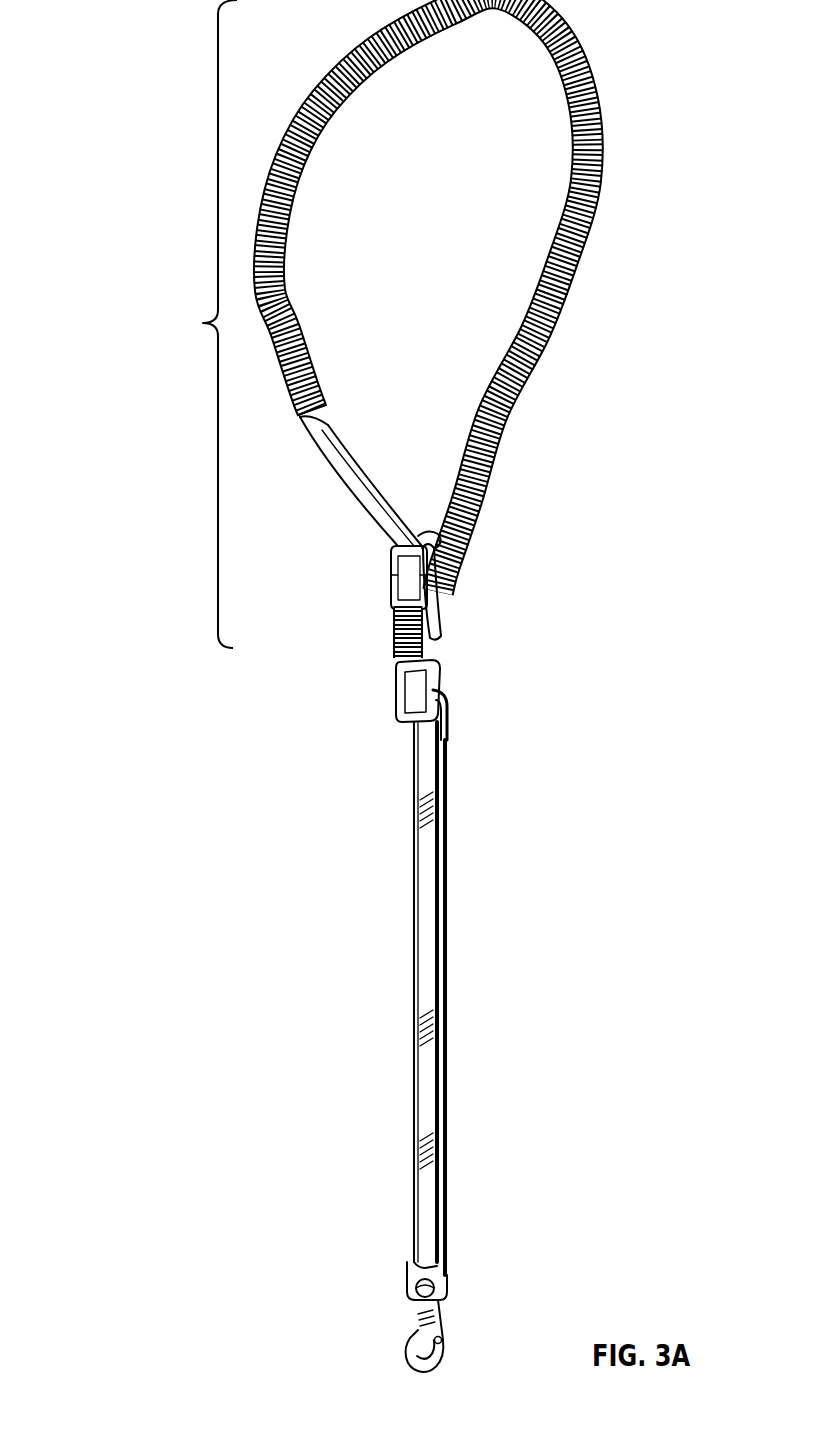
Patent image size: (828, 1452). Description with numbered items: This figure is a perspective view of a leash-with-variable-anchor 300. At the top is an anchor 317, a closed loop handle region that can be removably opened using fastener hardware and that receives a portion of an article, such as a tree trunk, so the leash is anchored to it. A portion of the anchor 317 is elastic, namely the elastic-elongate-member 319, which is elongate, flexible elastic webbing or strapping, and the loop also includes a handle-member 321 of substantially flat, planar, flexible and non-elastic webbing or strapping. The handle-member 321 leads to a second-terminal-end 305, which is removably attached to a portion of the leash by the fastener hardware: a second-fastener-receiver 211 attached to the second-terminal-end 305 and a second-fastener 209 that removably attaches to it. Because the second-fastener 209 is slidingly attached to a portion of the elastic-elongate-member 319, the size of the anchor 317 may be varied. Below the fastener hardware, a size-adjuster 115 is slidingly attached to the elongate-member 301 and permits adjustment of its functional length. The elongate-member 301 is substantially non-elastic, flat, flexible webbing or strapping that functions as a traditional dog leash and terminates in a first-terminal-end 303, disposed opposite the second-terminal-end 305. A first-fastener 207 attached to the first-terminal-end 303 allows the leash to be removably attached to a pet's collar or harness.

The leash-with-variable-anchor 300 is at (140, 49).
The anchor 317 is at (203, 323).
The elastic-elongate-member 319 is at (597, 183).
The handle-member 321 is at (360, 460).
The second-terminal-end 305 is at (430, 533).
The second-fastener-receiver 211 is at (395, 590).
The second-fastener 209 is at (440, 637).
The size-adjuster 115 is at (443, 697).
The elongate-member 301 is at (448, 937).
The first-terminal-end 303 is at (405, 1285).
The first-fastener 207 is at (410, 1363).